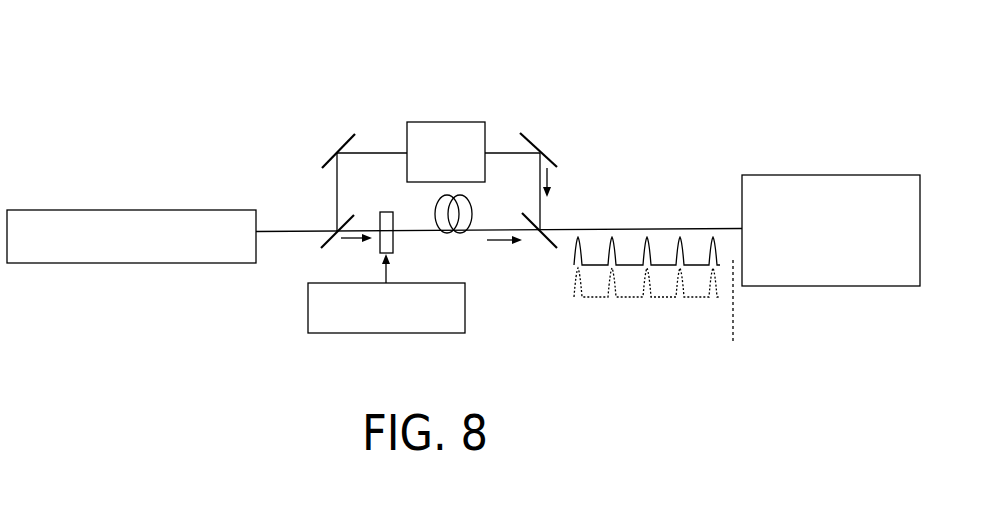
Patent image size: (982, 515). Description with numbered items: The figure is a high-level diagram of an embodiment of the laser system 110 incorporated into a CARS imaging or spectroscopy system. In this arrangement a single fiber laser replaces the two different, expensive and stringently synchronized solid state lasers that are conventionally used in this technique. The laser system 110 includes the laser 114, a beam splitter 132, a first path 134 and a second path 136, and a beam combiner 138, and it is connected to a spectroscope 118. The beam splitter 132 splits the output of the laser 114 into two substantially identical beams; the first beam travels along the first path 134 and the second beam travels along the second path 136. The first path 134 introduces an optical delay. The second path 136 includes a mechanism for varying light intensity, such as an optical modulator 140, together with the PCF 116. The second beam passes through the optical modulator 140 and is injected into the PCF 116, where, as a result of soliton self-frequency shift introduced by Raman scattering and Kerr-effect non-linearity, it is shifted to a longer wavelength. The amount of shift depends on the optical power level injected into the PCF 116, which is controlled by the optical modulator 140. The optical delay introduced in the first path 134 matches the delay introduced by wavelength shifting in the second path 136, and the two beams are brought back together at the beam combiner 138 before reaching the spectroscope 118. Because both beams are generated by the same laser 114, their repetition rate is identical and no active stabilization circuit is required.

The laser system 110 is at (104, 77).
The laser 114 is at (149, 252).
The PCF 116 is at (466, 252).
The spectroscope 118 is at (836, 276).
The beam splitter 132 is at (323, 222).
The first path 134 is at (368, 154).
The second path 136 is at (354, 253).
The beam combiner 138 is at (559, 219).
The optical modulator 140 is at (386, 295).